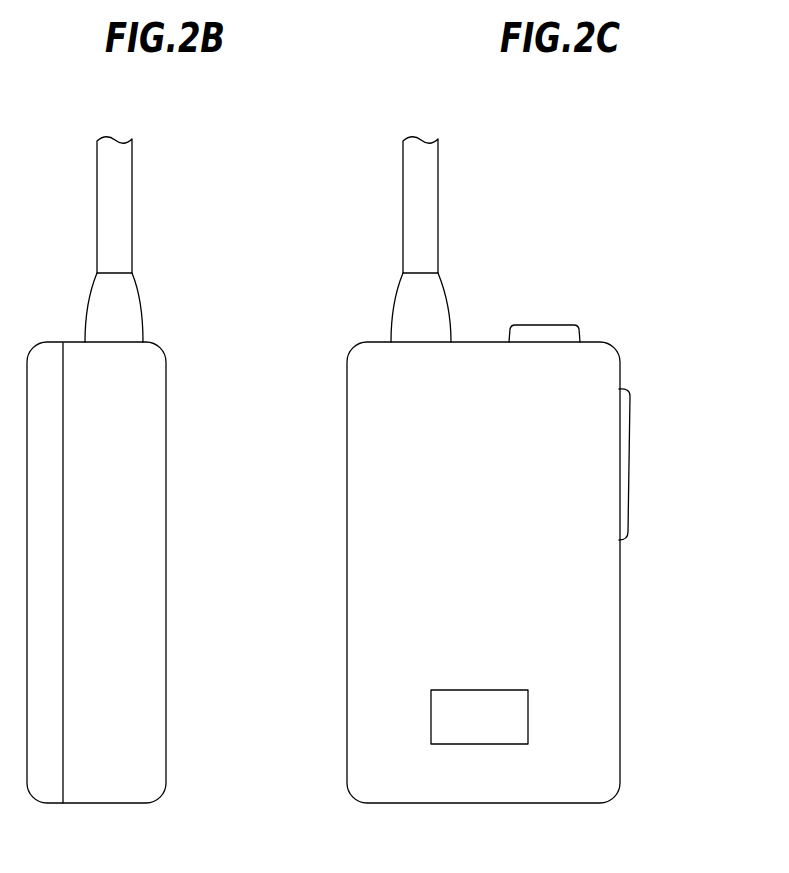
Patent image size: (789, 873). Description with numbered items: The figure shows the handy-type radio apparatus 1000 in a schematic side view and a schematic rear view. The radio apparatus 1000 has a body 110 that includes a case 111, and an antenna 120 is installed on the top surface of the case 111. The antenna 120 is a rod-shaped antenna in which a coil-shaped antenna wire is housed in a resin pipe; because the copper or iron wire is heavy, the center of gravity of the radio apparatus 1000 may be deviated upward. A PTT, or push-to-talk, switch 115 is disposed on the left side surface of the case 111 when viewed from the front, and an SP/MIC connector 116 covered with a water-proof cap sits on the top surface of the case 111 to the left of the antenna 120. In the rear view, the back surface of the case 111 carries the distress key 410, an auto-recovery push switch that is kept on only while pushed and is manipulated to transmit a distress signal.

In FIG. 2B, the radio apparatus 1000 is at (210, 193).
In FIG. 2C, the radio apparatus 1000 is at (662, 193).
In FIG. 2B, the antenna 120 is at (133, 257).
In FIG. 2C, the antenna 120 is at (402, 258).
In FIG. 2B, the body 110 is at (173, 338).
In FIG. 2C, the body 110 is at (629, 335).
In FIG. 2B, the case 111 is at (166, 475).
In FIG. 2C, the case 111 is at (620, 672).
In FIG. 2C, the SP/MIC connector 116 is at (553, 325).
In FIG. 2C, the PTT switch 115 is at (632, 397).
In FIG. 2C, the distress key 410 is at (431, 705).